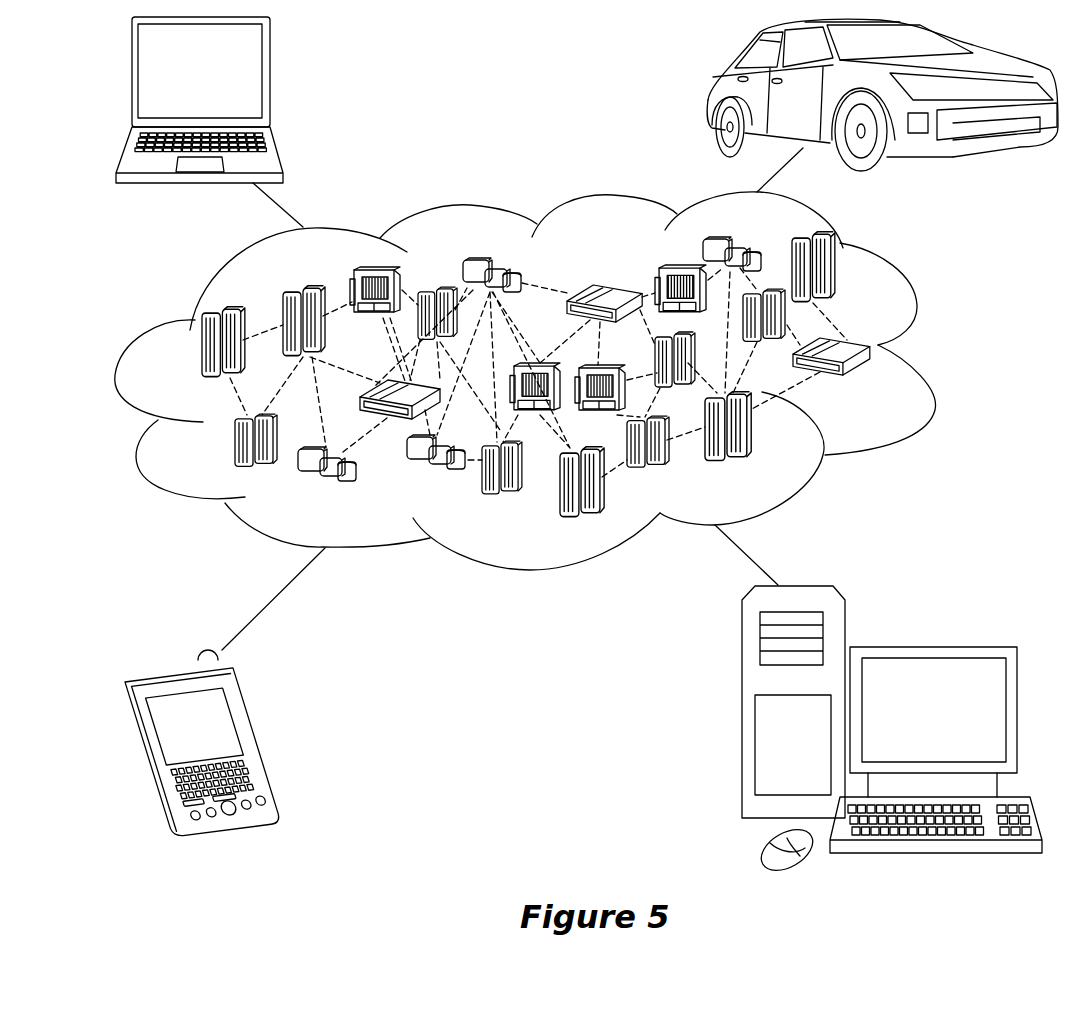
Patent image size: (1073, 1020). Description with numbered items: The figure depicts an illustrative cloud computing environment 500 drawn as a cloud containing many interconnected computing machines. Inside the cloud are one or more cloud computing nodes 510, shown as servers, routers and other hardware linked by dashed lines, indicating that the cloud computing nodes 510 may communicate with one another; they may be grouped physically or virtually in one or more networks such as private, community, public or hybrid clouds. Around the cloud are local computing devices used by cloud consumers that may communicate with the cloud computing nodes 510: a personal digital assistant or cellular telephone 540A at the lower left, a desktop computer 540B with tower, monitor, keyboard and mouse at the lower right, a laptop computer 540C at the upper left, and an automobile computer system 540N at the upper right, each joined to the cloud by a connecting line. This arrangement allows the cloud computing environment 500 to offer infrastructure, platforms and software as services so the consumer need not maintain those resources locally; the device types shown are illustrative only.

The cloud computing environment 500 is at (554, 381).
The cloud computing nodes 510 is at (882, 386).
The personal digital assistant (PDA) or cellular telephone 540A is at (260, 740).
The desktop computer 540B is at (930, 646).
The laptop computer 540C is at (270, 80).
The automobile computer system 540N is at (708, 95).